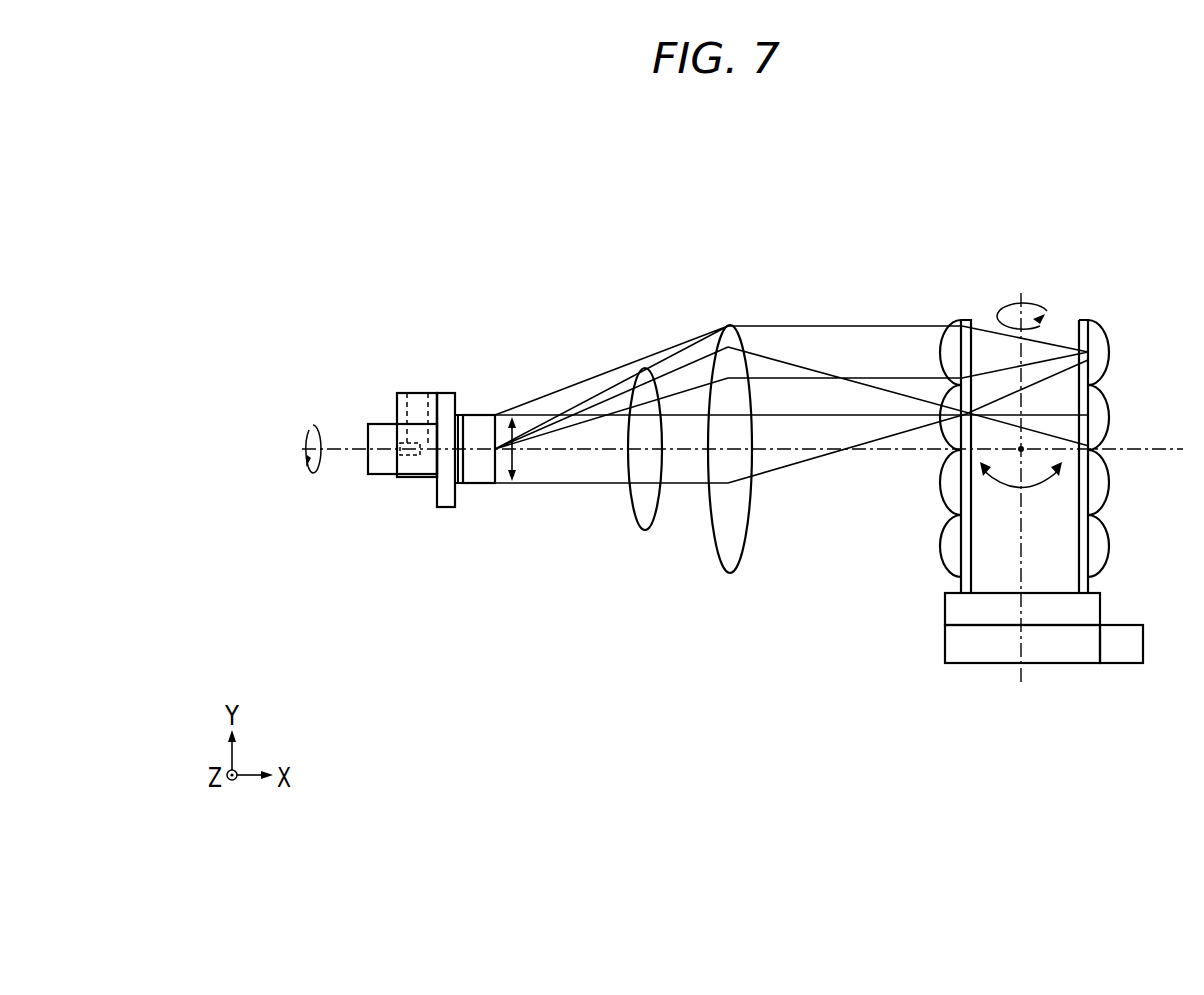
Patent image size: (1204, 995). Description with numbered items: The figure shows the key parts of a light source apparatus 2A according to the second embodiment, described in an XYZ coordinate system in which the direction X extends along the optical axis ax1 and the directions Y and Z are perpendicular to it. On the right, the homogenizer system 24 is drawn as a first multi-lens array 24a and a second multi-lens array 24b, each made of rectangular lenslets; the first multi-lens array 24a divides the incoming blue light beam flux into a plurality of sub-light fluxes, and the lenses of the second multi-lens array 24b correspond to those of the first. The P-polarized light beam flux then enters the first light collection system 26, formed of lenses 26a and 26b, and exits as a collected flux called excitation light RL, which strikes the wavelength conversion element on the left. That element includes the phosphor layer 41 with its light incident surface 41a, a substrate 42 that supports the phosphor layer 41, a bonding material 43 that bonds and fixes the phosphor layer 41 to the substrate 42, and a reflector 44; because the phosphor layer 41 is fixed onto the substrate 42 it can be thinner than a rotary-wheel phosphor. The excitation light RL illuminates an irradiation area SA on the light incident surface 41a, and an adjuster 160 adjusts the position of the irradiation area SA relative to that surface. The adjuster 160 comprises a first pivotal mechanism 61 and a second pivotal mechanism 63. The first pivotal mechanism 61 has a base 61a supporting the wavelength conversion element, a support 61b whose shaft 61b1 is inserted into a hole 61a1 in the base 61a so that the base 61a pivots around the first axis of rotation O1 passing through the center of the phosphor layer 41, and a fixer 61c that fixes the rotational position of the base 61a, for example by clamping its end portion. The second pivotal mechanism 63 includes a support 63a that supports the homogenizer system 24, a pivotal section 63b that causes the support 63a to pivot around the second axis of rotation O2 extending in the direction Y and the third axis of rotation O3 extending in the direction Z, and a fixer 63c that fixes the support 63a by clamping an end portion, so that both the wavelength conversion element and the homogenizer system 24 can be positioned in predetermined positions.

The light source apparatus 2A is at (1106, 188).
The adjuster 160 is at (743, 523).
The first pivotal mechanism 61 is at (421, 561).
The base 61a is at (413, 465).
The support 61b is at (385, 465).
The fixer 61c is at (397, 405).
The hole 61a1 is at (437, 379).
The shaft 61b1 is at (407, 393).
The substrate 42 is at (445, 502).
The bonding material 43 is at (457, 486).
The reflector 44 is at (462, 420).
The phosphor layer 41 is at (488, 420).
The light incident surface 41a is at (499, 480).
The irradiation area SA is at (514, 417).
The excitation light RL is at (546, 472).
The first light collection system 26 is at (673, 378).
The lens 26a is at (636, 395).
The lens 26b is at (722, 357).
The homogenizer system 24 is at (1024, 390).
The first multi-lens array 24a is at (950, 343).
The second multi-lens array 24b is at (1083, 412).
The second pivotal mechanism 63 is at (1014, 699).
The support 63a is at (955, 610).
The pivotal section 63b is at (1002, 657).
The fixer 63c is at (1091, 692).
The first axis of rotation O1 is at (321, 442).
The second axis of rotation O2 is at (1040, 326).
The third axis of rotation O3 is at (1021, 449).
The optical axis ax1 is at (1170, 448).